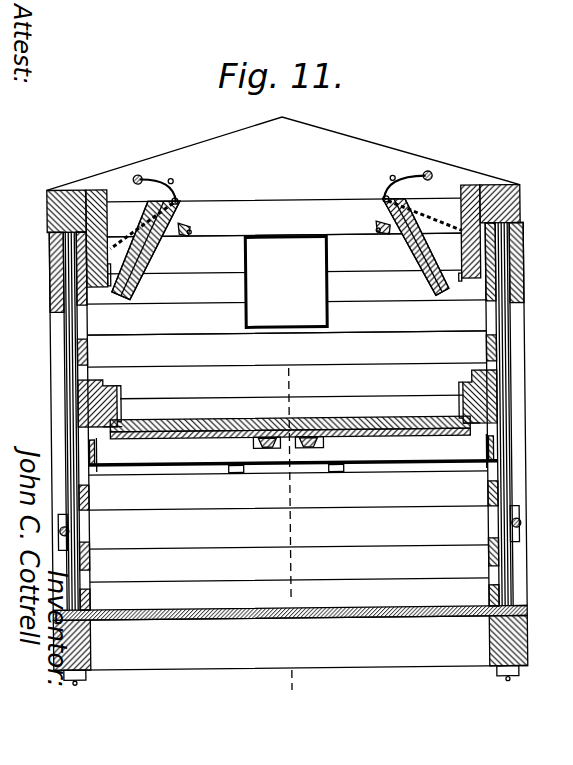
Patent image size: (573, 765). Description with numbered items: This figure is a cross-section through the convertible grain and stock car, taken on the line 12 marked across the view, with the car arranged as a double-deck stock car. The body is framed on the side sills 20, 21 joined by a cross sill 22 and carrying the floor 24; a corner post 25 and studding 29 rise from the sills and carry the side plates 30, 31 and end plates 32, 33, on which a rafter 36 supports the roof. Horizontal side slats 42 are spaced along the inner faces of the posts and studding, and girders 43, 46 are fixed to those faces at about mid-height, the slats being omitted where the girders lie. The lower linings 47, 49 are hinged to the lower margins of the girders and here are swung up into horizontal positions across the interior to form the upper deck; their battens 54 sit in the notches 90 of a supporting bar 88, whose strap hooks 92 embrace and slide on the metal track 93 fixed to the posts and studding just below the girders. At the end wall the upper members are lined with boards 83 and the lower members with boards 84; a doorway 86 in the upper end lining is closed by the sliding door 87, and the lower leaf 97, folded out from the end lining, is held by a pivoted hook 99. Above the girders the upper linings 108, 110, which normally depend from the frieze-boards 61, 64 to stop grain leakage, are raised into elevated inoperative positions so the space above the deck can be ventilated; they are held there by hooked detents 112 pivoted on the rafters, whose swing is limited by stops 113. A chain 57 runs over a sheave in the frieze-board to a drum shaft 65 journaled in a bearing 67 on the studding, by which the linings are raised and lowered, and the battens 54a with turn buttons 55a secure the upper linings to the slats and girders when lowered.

The section line 12— 12 is at (293, 531).
The side sill 20 is at (86, 648).
The side sill 21 is at (500, 640).
The cross sill 22 is at (290, 637).
The floor 24 is at (290, 578).
The corner post 25 is at (58, 368).
The studding 29 is at (67, 490).
The side plate 30 is at (75, 200).
The side plate 31 is at (503, 192).
The end plate 32 is at (284, 223).
The end plate 33 is at (290, 432).
The rafter 36 is at (283, 153).
The side slat 42 is at (93, 546).
The girder 43 is at (113, 389).
The girder 46 is at (462, 383).
The lower lining 47 is at (291, 407).
The lower lining 49 is at (394, 418).
The batten 54 is at (287, 451).
The batten 54a is at (190, 224).
The turn button 55a is at (193, 231).
The chain 57 is at (287, 222).
The frieze-board 61 is at (102, 192).
The frieze-board 64 is at (472, 190).
The drum shaft 65 is at (59, 528).
The bearing 67 is at (62, 537).
The lining board 83 is at (286, 345).
The lining board 84 is at (289, 547).
The doorway 86 is at (329, 285).
The sliding door 87 is at (286, 282).
The supporting bar 88 is at (292, 449).
The notch 90 is at (253, 443).
The hook 92 is at (95, 450).
The metal track 93 is at (90, 447).
The leaf 97 is at (181, 474).
The hook 99 is at (335, 472).
The upper lining 108 is at (161, 250).
The upper lining 110 is at (412, 247).
The hooked detent 112 is at (170, 190).
The stop 113 is at (163, 197).